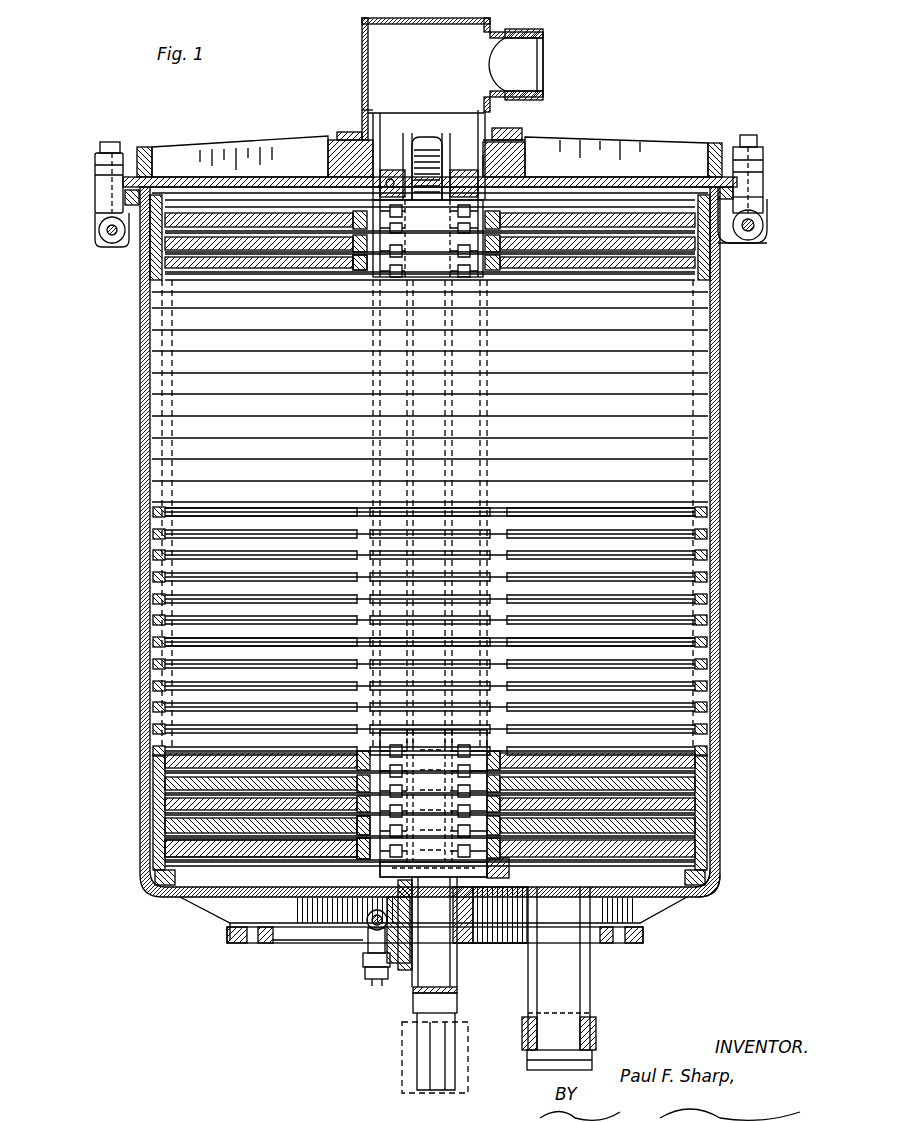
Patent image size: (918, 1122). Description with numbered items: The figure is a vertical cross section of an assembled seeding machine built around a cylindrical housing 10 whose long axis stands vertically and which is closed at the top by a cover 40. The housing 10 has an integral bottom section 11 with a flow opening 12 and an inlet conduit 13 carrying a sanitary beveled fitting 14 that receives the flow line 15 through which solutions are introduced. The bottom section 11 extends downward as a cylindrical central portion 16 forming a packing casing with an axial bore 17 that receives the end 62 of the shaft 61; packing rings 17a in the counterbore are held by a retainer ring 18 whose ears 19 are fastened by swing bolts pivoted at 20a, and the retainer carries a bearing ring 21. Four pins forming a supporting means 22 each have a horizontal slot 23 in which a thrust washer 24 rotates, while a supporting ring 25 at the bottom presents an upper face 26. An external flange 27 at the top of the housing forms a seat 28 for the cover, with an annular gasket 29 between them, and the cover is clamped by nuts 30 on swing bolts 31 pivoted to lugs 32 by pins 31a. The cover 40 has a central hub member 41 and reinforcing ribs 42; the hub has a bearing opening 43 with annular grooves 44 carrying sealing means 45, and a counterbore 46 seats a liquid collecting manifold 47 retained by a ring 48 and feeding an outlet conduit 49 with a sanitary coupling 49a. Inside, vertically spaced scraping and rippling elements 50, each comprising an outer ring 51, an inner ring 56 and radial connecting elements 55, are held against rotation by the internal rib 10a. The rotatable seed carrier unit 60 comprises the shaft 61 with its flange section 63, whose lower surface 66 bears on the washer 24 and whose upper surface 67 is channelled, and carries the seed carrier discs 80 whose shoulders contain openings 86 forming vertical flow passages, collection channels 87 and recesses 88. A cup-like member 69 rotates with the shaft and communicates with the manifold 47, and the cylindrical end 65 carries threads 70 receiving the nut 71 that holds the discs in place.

The cylindrical housing 10 is at (720, 375).
The rib 10a is at (710, 277).
The bottom section 11 is at (700, 902).
The flow opening 12 is at (655, 912).
The inlet conduit 13 is at (592, 965).
The sanitary beveled fitting 14 is at (598, 1042).
The flow line 15 is at (528, 1065).
The cylindrical central portion 16 is at (470, 930).
The axial bore 17 is at (462, 912).
The packing rings 17a is at (458, 948).
The retainer ring 18 is at (452, 962).
The ears 19 is at (367, 948).
The pivot attachment 20a is at (365, 972).
The bearing ring 21 is at (445, 985).
The supporting means 22 is at (505, 867).
The horizontal slot 23 is at (490, 900).
The thrust washer 24 is at (478, 915).
The supporting ring 25 is at (728, 876).
The upper horizontal face 26 is at (722, 893).
The external flange 27 is at (755, 225).
The seat 28 is at (760, 180).
The annular gasket 29 is at (760, 197).
The nuts 30 is at (752, 147).
The swing bolts 31 is at (100, 200).
The pins 31a is at (768, 243).
The lugs 32 is at (735, 243).
The cover 40 is at (620, 178).
The central hub member 41 is at (512, 160).
The reinforcing ribs 42 is at (598, 145).
The central bearing opening 43 is at (505, 132).
The annular grooves 44 is at (483, 133).
The annular sealing means 45 is at (487, 155).
The counterbore 46 is at (328, 146).
The liquid collecting manifold 47 is at (362, 64).
The ring 48 is at (340, 134).
The outlet flow conduit 49 is at (520, 24).
The sanitary beveled coupling 49a is at (546, 40).
The scraping and rippling element 50 is at (700, 638).
The outer ring 51 is at (700, 517).
The radial connecting elements 55 is at (600, 530).
The inner ring 56 is at (715, 755).
The rotatable seed carrier unit 60 is at (640, 313).
The shaft 61 is at (395, 970).
The shaft end section 62 is at (440, 992).
The flange portion 63 is at (400, 940).
The cylindrical end section 65 is at (428, 145).
The lower surface 66 is at (362, 888).
The upper surface 67 is at (700, 730).
The cup-like member 69 is at (368, 113).
The threads 70 is at (447, 170).
The nut 71 is at (393, 173).
The seed carrier discs 80 is at (700, 625).
The openings 86 is at (455, 280).
The liquid collection channel 87 is at (360, 268).
The recesses 88 is at (490, 265).